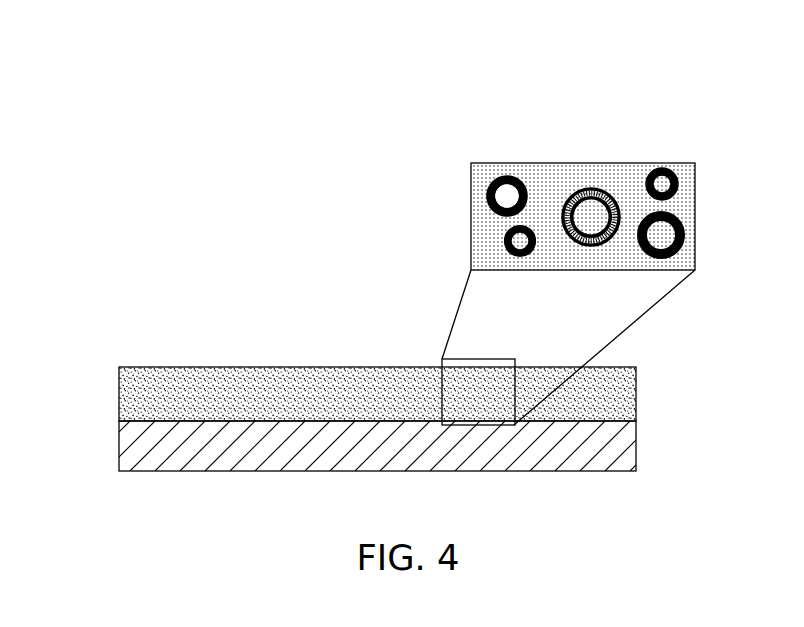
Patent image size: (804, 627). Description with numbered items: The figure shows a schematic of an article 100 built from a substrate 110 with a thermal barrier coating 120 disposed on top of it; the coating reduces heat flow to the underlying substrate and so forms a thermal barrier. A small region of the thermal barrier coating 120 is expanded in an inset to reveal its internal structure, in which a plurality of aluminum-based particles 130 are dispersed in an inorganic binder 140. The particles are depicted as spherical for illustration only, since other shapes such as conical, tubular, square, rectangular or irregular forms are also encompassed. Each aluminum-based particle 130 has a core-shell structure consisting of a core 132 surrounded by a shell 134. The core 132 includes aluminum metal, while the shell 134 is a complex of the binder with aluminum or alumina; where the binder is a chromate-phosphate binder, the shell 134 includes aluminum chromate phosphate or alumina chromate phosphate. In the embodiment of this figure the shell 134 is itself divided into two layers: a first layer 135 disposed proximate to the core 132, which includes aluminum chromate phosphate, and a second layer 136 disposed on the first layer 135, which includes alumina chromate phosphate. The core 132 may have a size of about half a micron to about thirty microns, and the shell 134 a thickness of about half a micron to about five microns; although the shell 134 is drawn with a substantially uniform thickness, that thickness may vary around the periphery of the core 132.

The article 100 is at (162, 45).
The substrate 110 is at (636, 440).
The thermal barrier coating 120 is at (636, 392).
The aluminum-based particles 130 is at (524, 193).
The core 132 is at (503, 198).
The shell 134 is at (488, 184).
The first layer 135 is at (598, 187).
The second layer 136 is at (585, 190).
The inorganic binder 140 is at (673, 262).